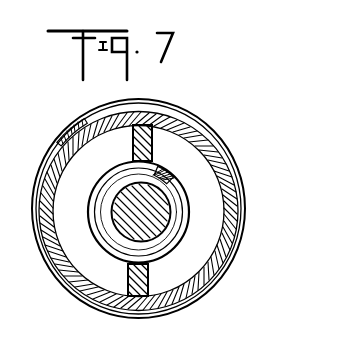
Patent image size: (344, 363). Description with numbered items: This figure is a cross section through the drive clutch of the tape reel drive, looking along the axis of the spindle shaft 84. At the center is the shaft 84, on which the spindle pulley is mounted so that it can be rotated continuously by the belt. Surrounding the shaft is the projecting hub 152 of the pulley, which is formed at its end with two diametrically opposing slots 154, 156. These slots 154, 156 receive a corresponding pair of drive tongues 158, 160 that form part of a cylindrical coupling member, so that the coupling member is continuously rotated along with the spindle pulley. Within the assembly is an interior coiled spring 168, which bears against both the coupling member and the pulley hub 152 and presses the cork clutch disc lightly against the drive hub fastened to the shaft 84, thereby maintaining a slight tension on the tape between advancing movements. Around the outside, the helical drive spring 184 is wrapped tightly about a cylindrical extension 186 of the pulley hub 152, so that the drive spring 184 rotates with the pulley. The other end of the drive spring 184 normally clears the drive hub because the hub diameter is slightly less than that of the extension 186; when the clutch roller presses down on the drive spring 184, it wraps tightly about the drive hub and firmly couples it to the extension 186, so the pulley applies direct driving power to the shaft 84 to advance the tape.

The shaft 84 is at (133, 213).
The hub 152 is at (205, 222).
The slot 154 is at (133, 131).
The slot 156 is at (128, 283).
The drive tongue 158 is at (152, 148).
The drive tongue 160 is at (148, 280).
The coiled spring 168 is at (176, 176).
The drive spring 184 is at (65, 123).
The cylindrical extension 186 is at (212, 273).